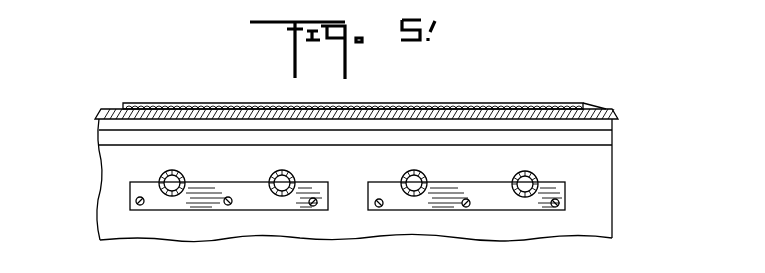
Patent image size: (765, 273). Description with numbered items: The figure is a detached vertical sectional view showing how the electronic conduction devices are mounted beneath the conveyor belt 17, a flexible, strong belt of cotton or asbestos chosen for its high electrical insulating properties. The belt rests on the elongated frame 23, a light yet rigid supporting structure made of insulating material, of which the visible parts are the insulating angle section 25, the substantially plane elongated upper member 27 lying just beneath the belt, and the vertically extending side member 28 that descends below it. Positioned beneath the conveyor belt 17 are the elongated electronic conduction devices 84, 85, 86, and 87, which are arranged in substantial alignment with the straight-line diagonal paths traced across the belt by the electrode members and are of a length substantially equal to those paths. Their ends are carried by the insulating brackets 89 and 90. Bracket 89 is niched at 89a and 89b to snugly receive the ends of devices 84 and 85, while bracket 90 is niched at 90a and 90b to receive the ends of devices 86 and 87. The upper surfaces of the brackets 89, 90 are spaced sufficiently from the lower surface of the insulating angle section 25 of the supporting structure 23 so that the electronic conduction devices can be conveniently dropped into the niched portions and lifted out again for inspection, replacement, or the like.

The conveyor belt 17 is at (222, 104).
The elongated frame 23 is at (612, 106).
The angle section 25 is at (350, 137).
The upper member 27 is at (108, 108).
The side member 28 is at (108, 185).
The electronic conduction device 84 is at (164, 173).
The electronic conduction device 85 is at (275, 173).
The electronic conduction device 86 is at (405, 173).
The electronic conduction device 87 is at (517, 174).
The bracket 89 is at (218, 187).
The niche 89a is at (158, 195).
The niche 89b is at (272, 195).
The bracket 90 is at (458, 190).
The niche 90a is at (404, 195).
The niche 90b is at (520, 197).